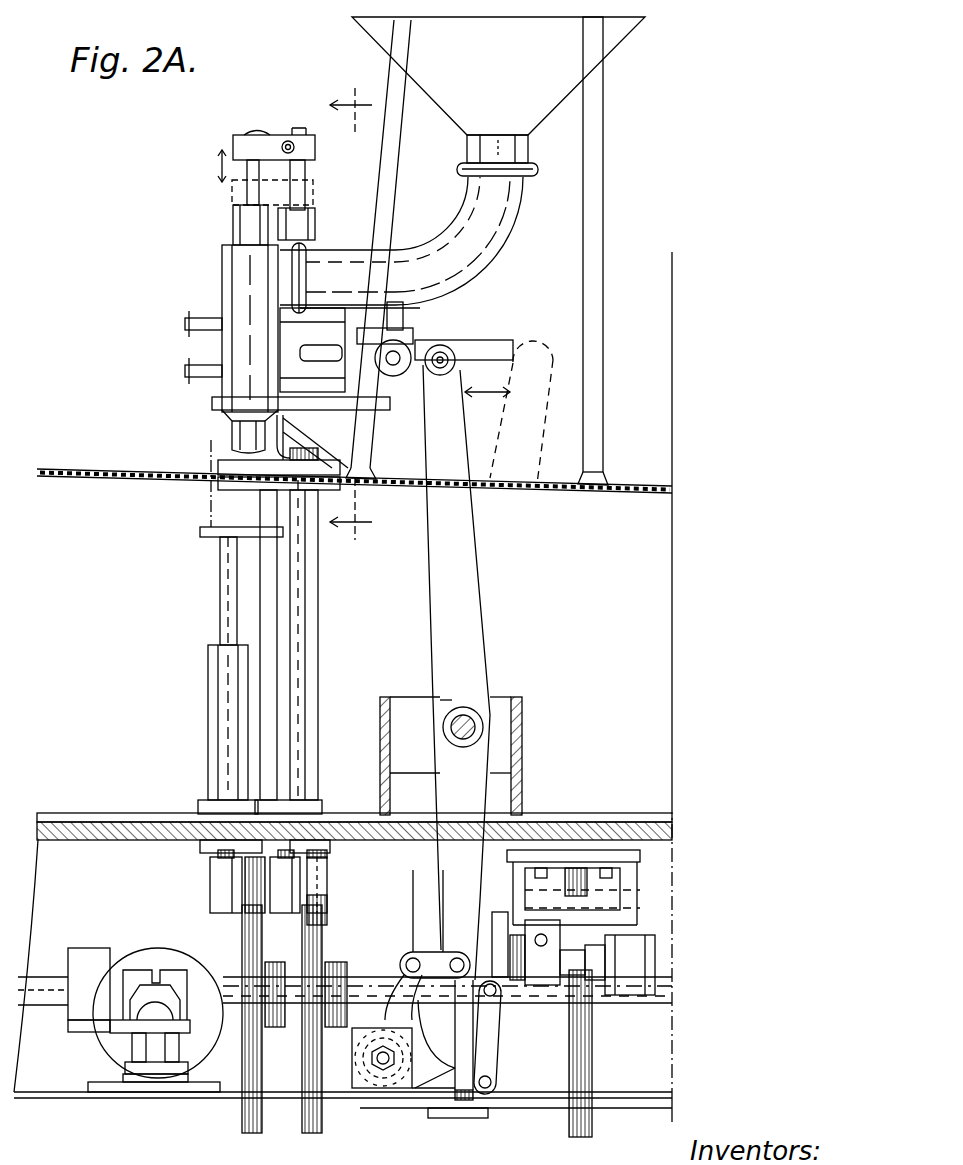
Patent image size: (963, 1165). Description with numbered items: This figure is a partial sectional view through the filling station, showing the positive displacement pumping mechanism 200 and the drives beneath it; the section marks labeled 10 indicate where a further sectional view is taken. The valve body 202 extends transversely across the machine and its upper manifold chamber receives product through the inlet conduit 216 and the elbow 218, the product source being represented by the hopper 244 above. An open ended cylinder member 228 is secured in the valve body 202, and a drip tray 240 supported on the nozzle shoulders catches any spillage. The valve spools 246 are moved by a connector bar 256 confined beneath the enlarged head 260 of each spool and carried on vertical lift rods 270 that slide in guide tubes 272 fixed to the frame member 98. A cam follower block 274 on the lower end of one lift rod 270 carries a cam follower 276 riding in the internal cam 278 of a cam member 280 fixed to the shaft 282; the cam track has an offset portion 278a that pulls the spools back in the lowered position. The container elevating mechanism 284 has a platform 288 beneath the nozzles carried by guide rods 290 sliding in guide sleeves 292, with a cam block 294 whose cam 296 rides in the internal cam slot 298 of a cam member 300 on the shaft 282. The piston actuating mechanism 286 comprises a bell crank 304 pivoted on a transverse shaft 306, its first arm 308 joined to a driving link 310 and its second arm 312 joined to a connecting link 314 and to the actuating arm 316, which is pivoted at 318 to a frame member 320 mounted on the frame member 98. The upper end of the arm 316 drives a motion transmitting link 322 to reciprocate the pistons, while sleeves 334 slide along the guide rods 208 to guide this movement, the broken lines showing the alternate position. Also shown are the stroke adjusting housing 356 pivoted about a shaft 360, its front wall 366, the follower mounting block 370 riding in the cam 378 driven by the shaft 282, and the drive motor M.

The section line 10 is at (353, 312).
The frame members 98 is at (112, 818).
The motor M is at (128, 950).
The positive displacement pumping mechanism 200 is at (208, 319).
The valve body 202 is at (232, 276).
The guide rods 208 is at (500, 352).
The inlet conduit 216 is at (300, 270).
The elbow 218 is at (487, 262).
The cylinder member 228 is at (305, 355).
The drip tray 240 is at (215, 403).
The hopper funnel 244 is at (385, 36).
The valve spools 246 is at (244, 187).
The connector bar 256 is at (240, 145).
The enlarged head 260 is at (256, 132).
The lift rods 270 is at (296, 180).
The guide tubes 272 is at (318, 650).
The cam follower block 274 is at (278, 912).
The cam follower 276 is at (322, 906).
The internal cam 278 is at (326, 888).
The offset portion 278a is at (320, 857).
The cam member 280 is at (322, 1122).
The shaft 282 is at (345, 1016).
The container elevating mechanism 284 is at (183, 675).
The piston actuating mechanism 286 is at (432, 922).
The platform 288 is at (200, 532).
The guide rods 290 is at (222, 585).
The guide sleeves 292 is at (193, 675).
The cam block 294 is at (210, 906).
The cam 296 is at (236, 884).
The internal cam slot 298 is at (240, 870).
The cam member 300 is at (248, 1118).
The bell crank 304 is at (340, 1070).
The transverse shaft 306 is at (383, 1064).
The first arm 308 is at (440, 1075).
The driving link 310 is at (498, 1066).
The second arm 312 is at (395, 1000).
The connecting link 314 is at (404, 958).
The actuating arm 316 is at (470, 605).
The pivot 318 is at (468, 722).
The frame member 320 is at (522, 737).
The motion transmitting link 322 is at (418, 340).
The sleeves 334 is at (362, 352).
The housing 356 is at (556, 890).
The shaft 360 is at (622, 882).
The front wall 366 is at (540, 988).
The follower mounting block 370 is at (640, 945).
The cam 378 is at (638, 1018).